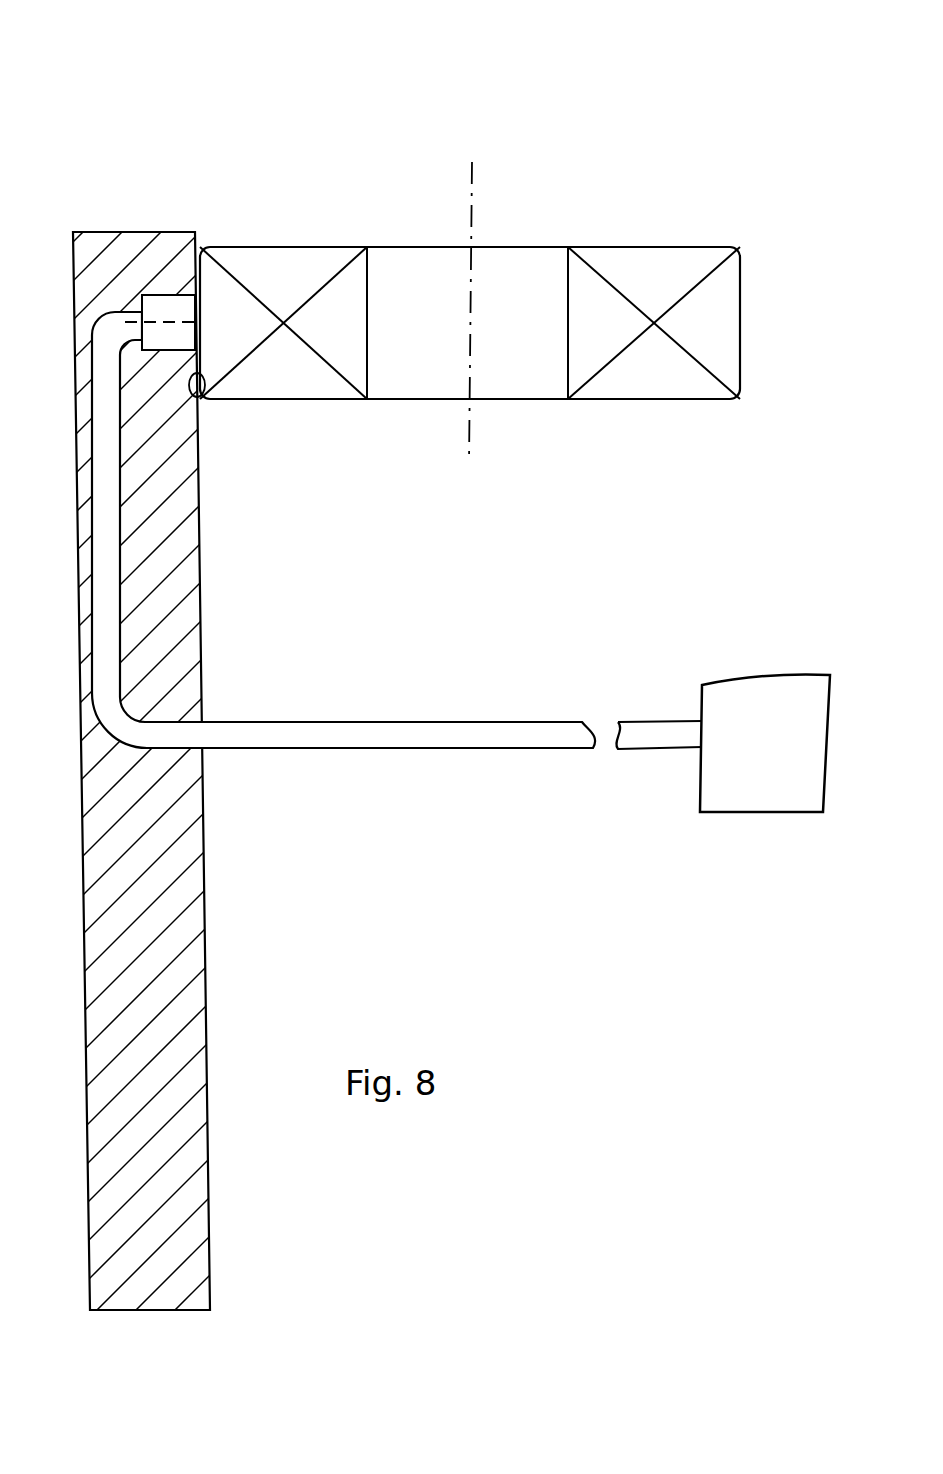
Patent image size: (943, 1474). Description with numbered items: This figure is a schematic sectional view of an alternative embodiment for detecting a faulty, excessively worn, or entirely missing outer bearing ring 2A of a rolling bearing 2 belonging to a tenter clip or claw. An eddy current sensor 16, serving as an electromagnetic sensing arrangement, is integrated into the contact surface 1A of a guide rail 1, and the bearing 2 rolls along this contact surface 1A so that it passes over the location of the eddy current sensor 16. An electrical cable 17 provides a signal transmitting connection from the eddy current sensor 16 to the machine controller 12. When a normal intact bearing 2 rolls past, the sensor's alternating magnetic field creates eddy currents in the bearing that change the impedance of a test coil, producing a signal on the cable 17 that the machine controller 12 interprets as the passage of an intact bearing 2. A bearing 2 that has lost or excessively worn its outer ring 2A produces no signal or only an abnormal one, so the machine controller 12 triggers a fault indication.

The guide rail 1 is at (200, 536).
The contact surface 1A is at (201, 395).
The rolling bearing 2 is at (517, 308).
The outer bearing ring 2A is at (718, 328).
The machine controller 12 is at (783, 727).
The eddy current sensor 16 is at (170, 309).
The electrical cable 17 is at (292, 718).